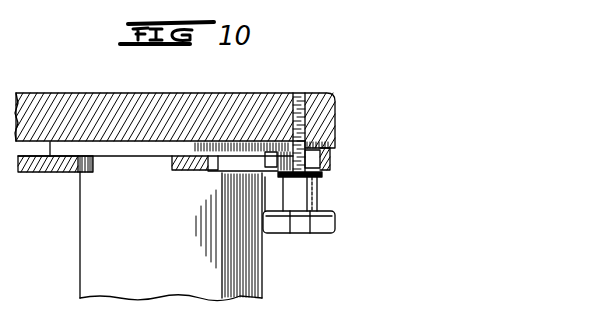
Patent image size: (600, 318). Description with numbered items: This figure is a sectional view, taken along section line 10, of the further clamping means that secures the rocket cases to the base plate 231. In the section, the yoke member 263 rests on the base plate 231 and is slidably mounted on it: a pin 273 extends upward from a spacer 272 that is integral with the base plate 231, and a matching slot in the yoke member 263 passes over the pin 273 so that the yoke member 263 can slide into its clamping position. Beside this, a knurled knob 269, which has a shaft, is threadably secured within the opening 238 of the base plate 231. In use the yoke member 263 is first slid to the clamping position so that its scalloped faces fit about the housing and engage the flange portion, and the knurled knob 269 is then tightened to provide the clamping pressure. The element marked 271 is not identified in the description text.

The base plate 231 is at (221, 102).
The opening 238 is at (302, 93).
The yoke member 263 is at (2, 101).
The knurled knob 269 is at (327, 234).
The clearance / spacer layer 271 is at (307, 128).
The spacer 272 is at (316, 160).
The pin 273 is at (265, 158).
The section line 10 is at (17, 228).